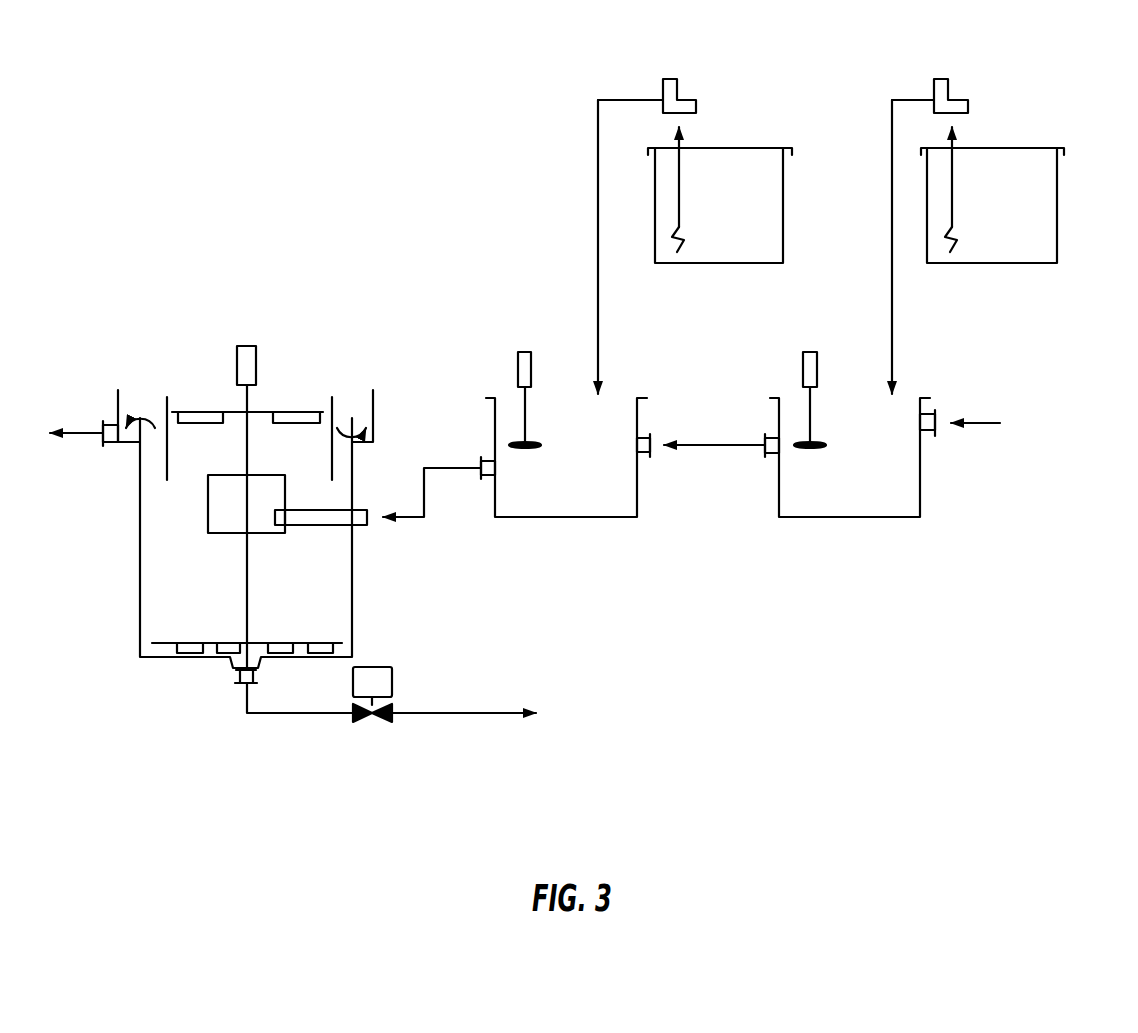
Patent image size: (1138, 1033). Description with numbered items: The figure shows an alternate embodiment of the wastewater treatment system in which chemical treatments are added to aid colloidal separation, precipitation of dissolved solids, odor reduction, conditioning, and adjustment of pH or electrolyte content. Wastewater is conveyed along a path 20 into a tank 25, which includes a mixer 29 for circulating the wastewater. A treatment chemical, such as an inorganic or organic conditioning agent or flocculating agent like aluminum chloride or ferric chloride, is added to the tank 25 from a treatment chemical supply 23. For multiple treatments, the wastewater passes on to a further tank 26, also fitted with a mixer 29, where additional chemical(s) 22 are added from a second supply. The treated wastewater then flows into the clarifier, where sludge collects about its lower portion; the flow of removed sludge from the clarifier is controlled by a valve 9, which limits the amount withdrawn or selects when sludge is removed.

The valve 9 is at (380, 662).
The path 20 is at (972, 413).
The chemical(s) 22 is at (712, 90).
The treatment chemical supply 23 is at (1025, 90).
The tank 25 is at (853, 518).
The tank 26 is at (563, 518).
The mixer 29 is at (525, 351).